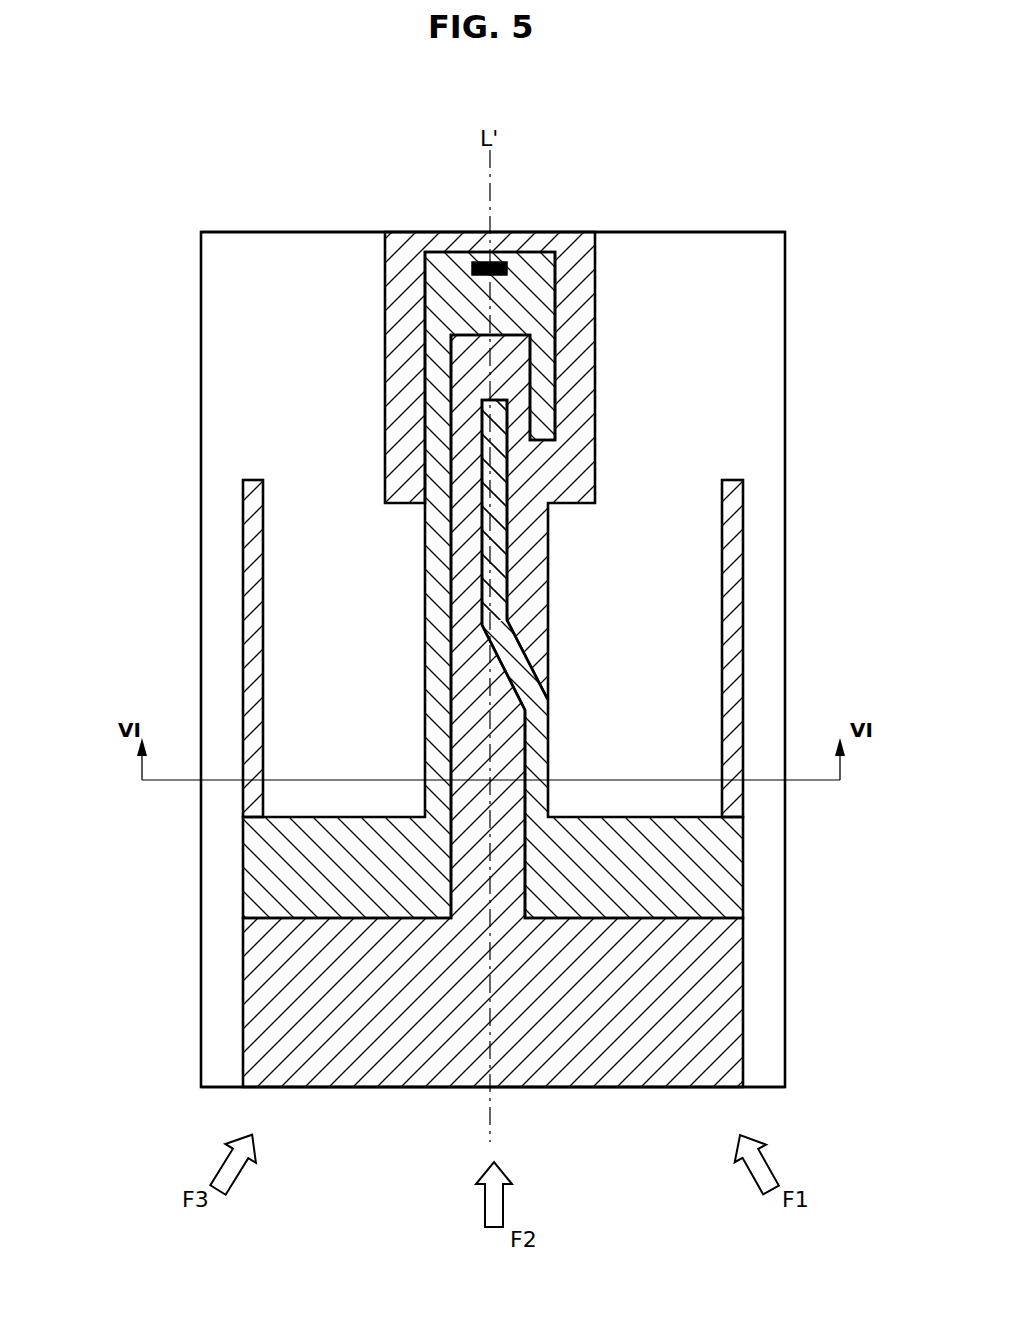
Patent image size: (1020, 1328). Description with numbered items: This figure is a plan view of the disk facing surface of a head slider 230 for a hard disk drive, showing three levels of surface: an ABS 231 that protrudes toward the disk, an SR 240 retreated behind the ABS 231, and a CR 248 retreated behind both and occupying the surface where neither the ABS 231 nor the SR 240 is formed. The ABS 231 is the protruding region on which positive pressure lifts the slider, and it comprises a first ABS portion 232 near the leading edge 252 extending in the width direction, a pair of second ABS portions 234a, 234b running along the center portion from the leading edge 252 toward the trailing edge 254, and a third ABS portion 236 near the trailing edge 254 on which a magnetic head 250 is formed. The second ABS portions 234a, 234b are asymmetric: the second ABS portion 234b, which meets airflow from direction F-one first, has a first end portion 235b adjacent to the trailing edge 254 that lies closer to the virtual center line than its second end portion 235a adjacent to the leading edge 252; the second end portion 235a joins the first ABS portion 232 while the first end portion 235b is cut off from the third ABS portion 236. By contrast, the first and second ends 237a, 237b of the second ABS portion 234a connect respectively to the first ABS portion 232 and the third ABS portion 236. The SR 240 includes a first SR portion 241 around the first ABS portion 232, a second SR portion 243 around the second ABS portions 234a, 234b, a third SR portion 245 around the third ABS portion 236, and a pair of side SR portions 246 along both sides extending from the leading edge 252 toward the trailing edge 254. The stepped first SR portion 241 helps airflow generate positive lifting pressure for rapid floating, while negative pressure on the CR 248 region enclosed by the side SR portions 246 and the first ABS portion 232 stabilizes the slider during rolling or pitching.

The head slider 230 is at (250, 188).
The ABS 231 is at (127, 360).
The first ABS portion 232 is at (323, 853).
The second ABS portion 234a is at (443, 558).
The second ABS portion 234b is at (500, 482).
The second end portion 235a is at (527, 807).
The first end portion 235b is at (508, 408).
The third ABS portion 236 is at (460, 302).
The first end 237a is at (443, 790).
The second end 237b is at (432, 357).
The SR 240 is at (855, 340).
The first SR portion 241 is at (620, 975).
The second SR portion 243 is at (473, 553).
The third SR portion 245 is at (407, 385).
The side SR portions 246 is at (255, 653).
The CR 248 is at (232, 283).
The magnetic head 250 is at (500, 262).
The leading edge 252 is at (577, 1088).
The trailing edge 254 is at (695, 231).